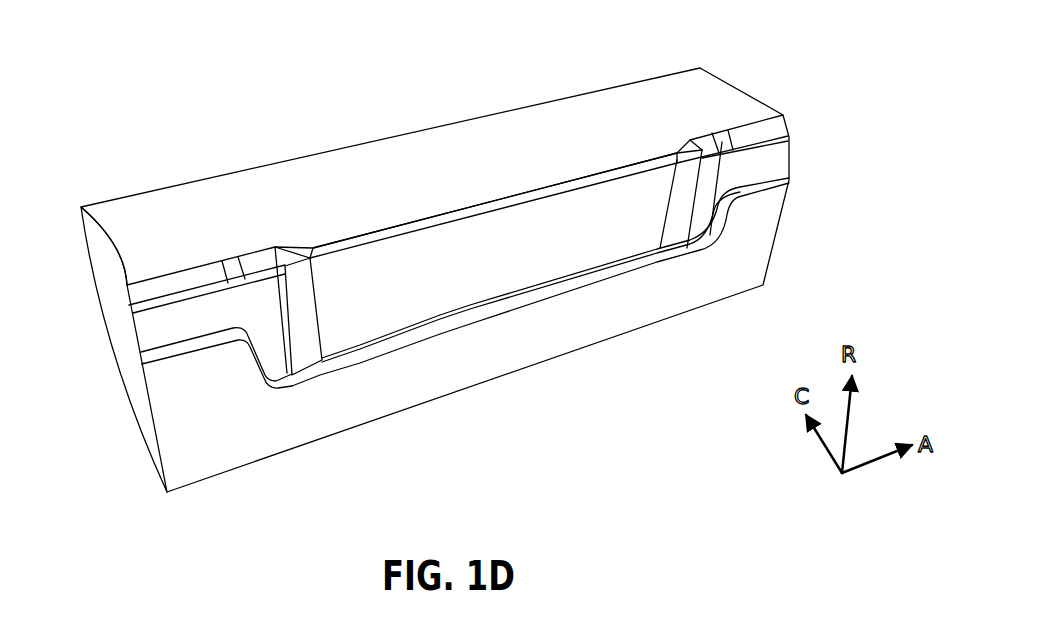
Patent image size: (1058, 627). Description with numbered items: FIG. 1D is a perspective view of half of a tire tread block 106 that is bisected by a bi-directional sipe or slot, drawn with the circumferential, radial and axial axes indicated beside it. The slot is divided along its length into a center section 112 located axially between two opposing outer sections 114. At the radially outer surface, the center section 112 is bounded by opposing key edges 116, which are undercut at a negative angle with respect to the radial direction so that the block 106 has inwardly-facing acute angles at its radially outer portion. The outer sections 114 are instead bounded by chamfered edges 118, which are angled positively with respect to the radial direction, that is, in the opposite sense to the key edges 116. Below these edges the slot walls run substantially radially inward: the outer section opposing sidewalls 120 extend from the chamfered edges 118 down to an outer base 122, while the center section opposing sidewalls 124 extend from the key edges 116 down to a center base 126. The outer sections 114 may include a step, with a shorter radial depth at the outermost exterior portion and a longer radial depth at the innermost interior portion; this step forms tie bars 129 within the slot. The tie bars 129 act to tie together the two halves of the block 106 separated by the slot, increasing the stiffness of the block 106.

The tread block 106 is at (82, 76).
The center section 112 is at (392, 268).
The outer sections 114 is at (772, 158).
The key edges 116 is at (468, 210).
The chamfered edges 118 is at (188, 285).
The outer section opposing sidewalls 120 is at (160, 330).
The outer base 122 is at (175, 353).
The center section opposing sidewalls 124 is at (503, 273).
The center base 126 is at (578, 287).
The tie bars 129 is at (202, 367).